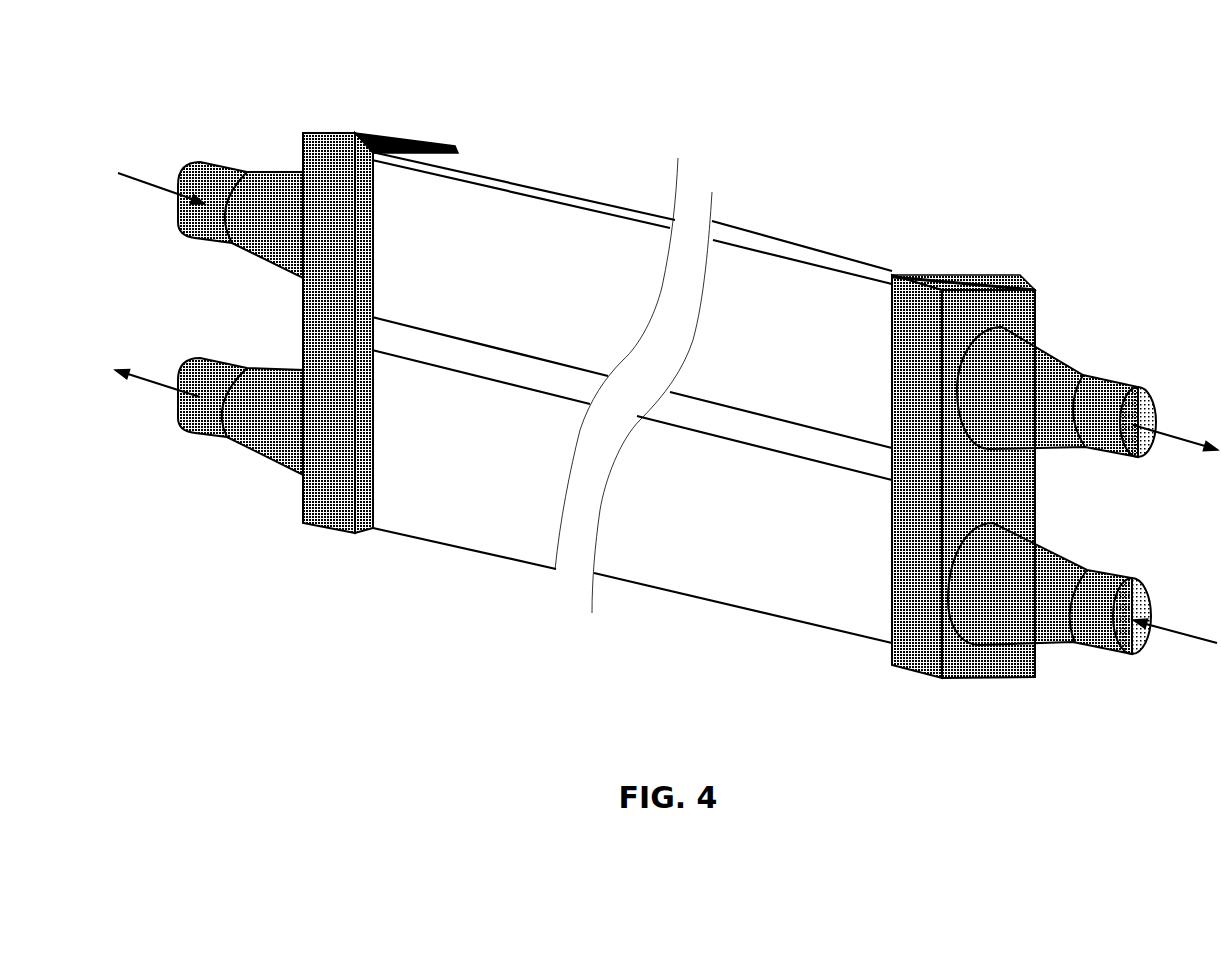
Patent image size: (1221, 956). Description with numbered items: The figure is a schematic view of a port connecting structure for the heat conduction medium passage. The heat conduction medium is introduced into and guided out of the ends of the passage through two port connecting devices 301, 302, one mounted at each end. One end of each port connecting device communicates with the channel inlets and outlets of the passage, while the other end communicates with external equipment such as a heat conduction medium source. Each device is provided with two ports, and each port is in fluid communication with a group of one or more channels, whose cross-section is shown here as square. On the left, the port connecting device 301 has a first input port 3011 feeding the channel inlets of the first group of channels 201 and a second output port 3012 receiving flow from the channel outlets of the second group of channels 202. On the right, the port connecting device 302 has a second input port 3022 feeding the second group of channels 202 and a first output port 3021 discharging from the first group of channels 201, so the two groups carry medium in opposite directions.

The port connecting device 301 is at (380, 130).
The first input port 3011 is at (275, 187).
The second output port 3012 is at (275, 427).
The first group of channels 201 is at (450, 225).
The second group of channels 202 is at (447, 453).
The port connecting device 302 is at (970, 293).
The first output port 3021 is at (1017, 373).
The second input port 3022 is at (1040, 650).